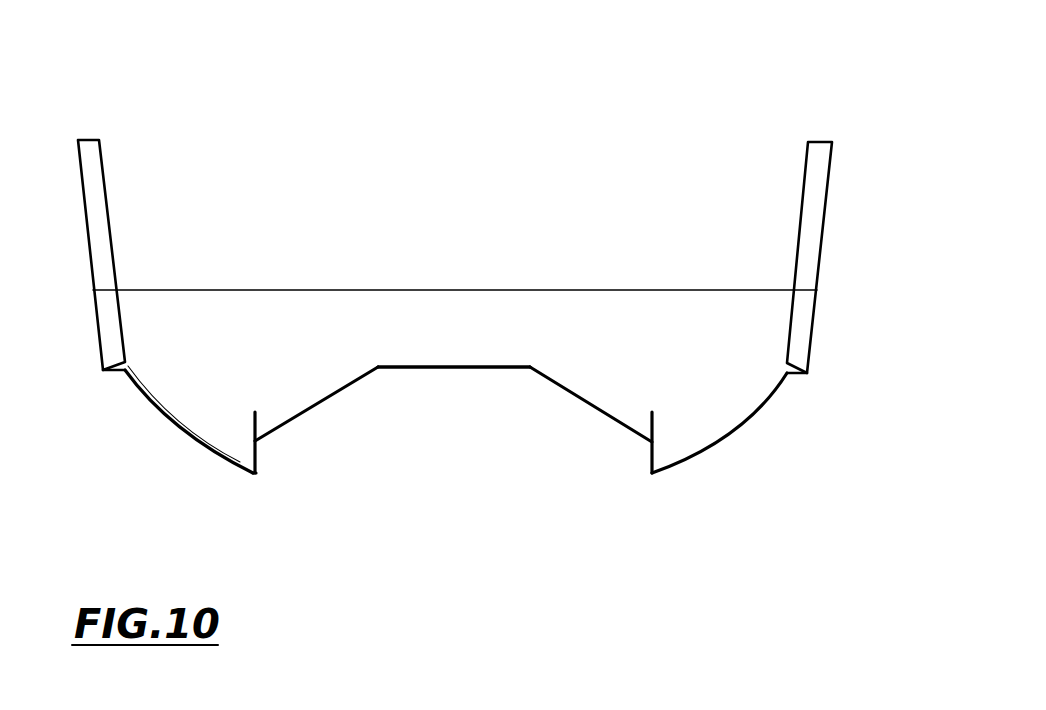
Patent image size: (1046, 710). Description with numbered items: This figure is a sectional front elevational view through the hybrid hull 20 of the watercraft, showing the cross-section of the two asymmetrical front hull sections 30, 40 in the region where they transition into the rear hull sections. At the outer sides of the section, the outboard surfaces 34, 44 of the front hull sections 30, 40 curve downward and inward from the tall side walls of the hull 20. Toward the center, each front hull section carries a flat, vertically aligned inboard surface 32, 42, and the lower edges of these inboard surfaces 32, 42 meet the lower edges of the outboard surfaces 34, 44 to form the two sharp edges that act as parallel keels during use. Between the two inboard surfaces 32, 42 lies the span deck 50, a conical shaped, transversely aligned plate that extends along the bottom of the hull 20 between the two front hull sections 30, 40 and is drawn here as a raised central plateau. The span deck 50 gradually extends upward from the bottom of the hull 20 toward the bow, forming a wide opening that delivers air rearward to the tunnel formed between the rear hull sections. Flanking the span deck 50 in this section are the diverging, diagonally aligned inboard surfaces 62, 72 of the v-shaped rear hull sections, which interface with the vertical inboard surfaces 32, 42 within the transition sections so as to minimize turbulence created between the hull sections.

The hybrid hull 20 is at (445, 287).
The asymmetrical front hull section 30 is at (200, 444).
The inboard surface 32 is at (262, 455).
The outboard surface 34 is at (152, 407).
The asymmetrical front hull section 40 is at (691, 452).
The inboard surface 42 is at (642, 455).
The outboard surface 44 is at (750, 415).
The span deck 50 is at (455, 370).
The inboard surface 62 is at (312, 408).
The inboard surface 72 is at (602, 418).